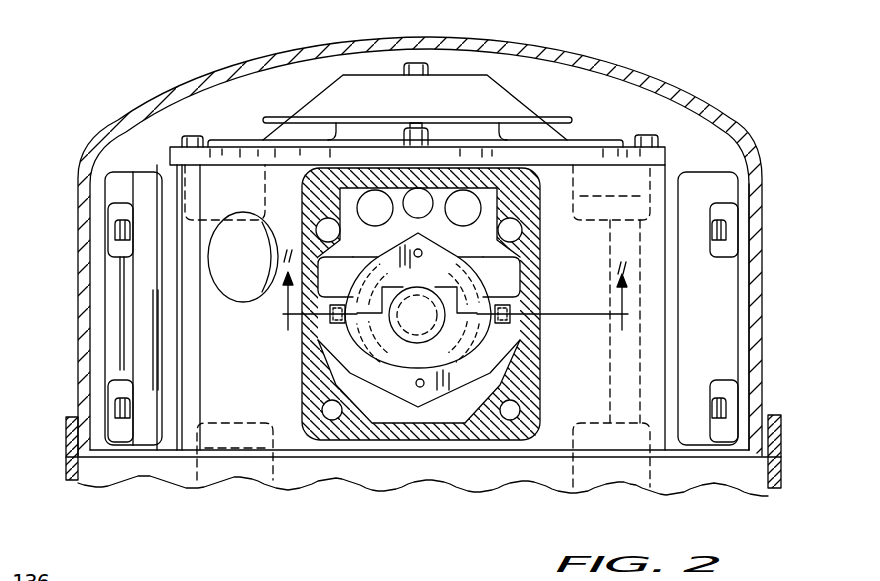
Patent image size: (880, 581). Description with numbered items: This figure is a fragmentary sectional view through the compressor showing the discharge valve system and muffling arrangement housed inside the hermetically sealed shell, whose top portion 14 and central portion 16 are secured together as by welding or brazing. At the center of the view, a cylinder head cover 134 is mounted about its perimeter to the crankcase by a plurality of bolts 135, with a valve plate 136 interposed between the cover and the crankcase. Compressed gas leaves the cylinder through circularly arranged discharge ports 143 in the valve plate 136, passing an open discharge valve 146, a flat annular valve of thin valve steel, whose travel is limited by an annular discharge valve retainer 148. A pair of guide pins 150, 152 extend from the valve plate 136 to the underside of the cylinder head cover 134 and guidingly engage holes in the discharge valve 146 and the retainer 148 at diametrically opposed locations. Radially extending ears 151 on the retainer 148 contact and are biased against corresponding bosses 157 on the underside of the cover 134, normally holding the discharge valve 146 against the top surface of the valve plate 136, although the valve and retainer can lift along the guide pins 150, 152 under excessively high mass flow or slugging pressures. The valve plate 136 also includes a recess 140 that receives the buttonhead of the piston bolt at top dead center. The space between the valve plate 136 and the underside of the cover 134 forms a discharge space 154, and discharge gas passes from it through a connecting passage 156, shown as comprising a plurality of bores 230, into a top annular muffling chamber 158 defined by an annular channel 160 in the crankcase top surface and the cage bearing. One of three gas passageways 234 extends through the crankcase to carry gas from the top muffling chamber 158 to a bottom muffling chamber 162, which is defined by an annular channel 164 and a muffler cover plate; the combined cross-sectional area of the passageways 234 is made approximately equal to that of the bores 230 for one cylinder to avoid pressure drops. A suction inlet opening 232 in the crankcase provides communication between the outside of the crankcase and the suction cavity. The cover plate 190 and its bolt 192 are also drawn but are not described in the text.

The top portion 14 is at (764, 321).
The central portion 16 is at (773, 462).
The cylinder head cover 134 is at (140, 192).
The bolts 135 is at (118, 232).
The valve plate 136 is at (673, 163).
The recess 140 is at (405, 345).
The discharge ports 143 is at (348, 363).
The discharge valve 146 is at (300, 200).
The discharge valve retainer 148 is at (385, 265).
The guide pin 150 is at (422, 253).
The ears 151 is at (335, 318).
The guide pin 152 is at (420, 387).
The discharge space 154 is at (330, 278).
The connecting passage 156 is at (440, 184).
The bosses 157 is at (332, 325).
The top annular muffling chamber 158 is at (417, 192).
The annular channel 160 is at (655, 197).
The bottom muffling chamber 162 is at (235, 451).
The annular channel 164 is at (650, 430).
The cover plate 190 is at (497, 95).
The cover bolt 192 is at (414, 63).
The bores 230 is at (397, 190).
The suction inlet opening 232 is at (222, 263).
The gas passageways 234 is at (640, 308).